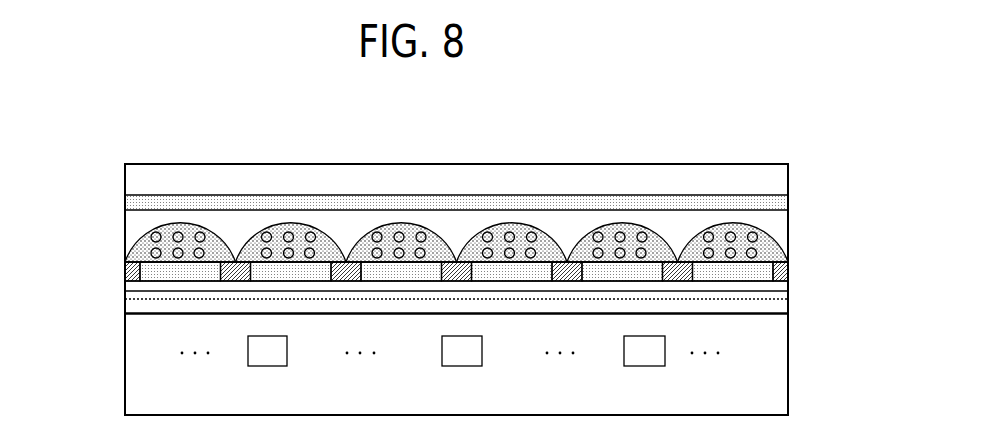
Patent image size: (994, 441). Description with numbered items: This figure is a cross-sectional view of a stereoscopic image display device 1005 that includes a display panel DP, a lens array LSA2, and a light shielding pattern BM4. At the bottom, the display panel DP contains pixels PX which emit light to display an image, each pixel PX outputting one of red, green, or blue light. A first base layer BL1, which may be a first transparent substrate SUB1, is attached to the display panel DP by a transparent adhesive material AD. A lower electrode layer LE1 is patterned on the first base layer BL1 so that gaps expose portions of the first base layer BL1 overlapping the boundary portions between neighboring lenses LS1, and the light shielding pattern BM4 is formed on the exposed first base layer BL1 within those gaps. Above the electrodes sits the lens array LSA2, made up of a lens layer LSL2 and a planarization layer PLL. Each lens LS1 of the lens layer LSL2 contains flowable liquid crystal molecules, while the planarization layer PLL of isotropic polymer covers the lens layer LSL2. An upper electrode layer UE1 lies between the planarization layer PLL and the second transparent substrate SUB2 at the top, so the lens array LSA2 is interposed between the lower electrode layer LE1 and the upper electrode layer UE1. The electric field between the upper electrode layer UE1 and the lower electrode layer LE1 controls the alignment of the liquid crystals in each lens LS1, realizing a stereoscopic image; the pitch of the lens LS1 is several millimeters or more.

The stereoscopic image display device 1005 is at (525, 147).
The second transparent substrate SUB2 is at (778, 180).
The upper electrode layer UE1 is at (780, 204).
The lens array LSA2 is at (66, 210).
The planarization layer PLL is at (132, 222).
The lens layer LSL2 is at (426, 191).
The lens LS1 is at (211, 218).
The lower electrode layer LE1 is at (763, 271).
The light shielding pattern BM4 is at (228, 273).
The first base layer BL1 is at (778, 288).
The first transparent substrate SUB1 is at (491, 314).
The transparent adhesive material AD is at (133, 310).
The display panel DP is at (506, 356).
The pixel PX is at (456, 351).